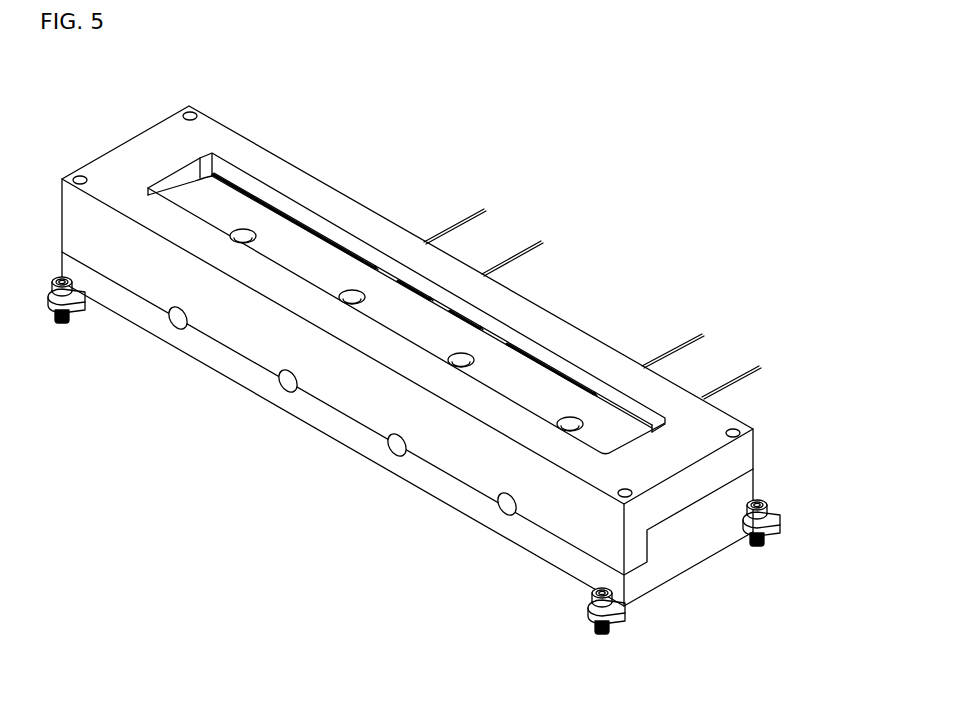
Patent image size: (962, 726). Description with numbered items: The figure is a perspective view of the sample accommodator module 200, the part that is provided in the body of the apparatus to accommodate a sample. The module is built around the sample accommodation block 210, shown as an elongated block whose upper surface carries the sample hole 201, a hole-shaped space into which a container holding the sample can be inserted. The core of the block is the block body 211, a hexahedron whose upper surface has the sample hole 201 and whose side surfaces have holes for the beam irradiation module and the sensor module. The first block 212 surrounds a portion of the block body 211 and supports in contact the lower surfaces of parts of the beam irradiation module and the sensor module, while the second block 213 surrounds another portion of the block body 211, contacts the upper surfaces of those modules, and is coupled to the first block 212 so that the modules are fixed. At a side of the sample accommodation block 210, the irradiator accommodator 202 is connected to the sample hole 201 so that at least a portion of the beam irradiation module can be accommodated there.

The sample accommodator module 200 is at (477, 363).
The sample hole 201 is at (463, 366).
The irradiator accommodator 202 is at (399, 448).
The sample accommodation block 210 is at (477, 370).
The block body 211 is at (608, 429).
The first block 212 is at (727, 511).
The second block 213 is at (727, 461).